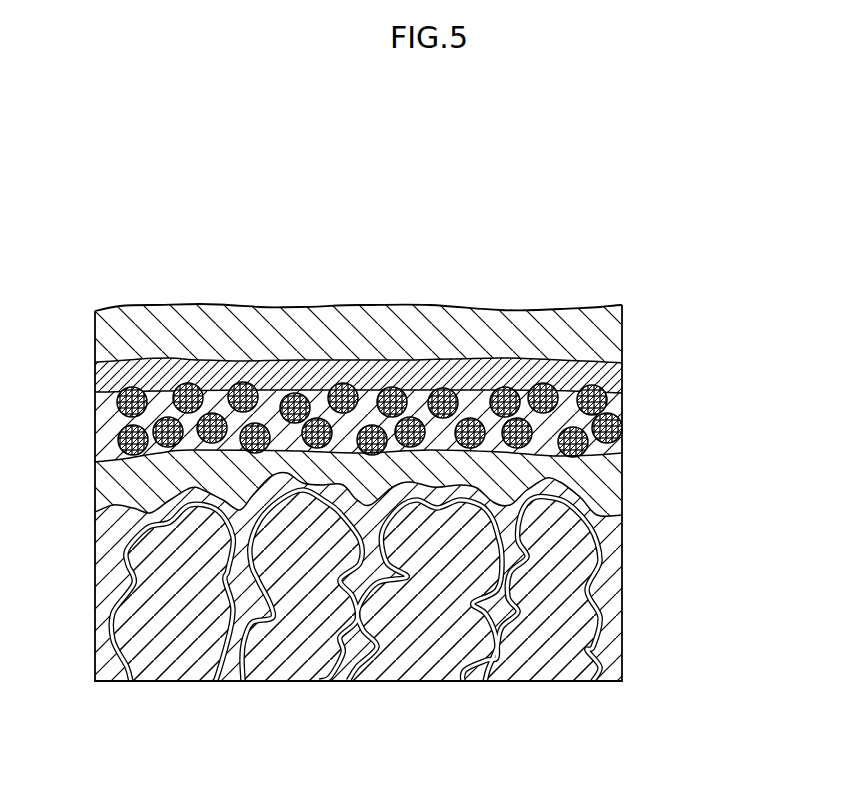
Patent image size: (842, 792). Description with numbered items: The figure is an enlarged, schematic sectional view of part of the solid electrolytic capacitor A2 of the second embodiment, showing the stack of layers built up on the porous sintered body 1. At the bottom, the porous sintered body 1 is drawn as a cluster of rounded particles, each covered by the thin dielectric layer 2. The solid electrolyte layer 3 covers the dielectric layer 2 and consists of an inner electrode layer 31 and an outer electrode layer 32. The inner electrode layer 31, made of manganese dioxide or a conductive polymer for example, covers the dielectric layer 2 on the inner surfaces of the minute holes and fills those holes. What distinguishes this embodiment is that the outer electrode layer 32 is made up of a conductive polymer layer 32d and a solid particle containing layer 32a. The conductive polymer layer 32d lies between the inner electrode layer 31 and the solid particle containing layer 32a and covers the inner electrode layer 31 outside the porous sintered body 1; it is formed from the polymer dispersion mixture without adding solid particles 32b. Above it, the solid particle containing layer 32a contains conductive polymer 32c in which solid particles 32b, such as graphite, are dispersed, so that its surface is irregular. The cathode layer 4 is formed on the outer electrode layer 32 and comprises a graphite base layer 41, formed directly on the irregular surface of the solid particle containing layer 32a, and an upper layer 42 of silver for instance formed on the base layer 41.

The solid electrolytic capacitor A2 is at (76, 281).
The porous sintered body 1 is at (568, 607).
The dielectric layer 2 is at (605, 557).
The solid electrolyte layer 3 is at (468, 531).
The inner electrode layer 31 is at (608, 522).
The outer electrode layer 32 is at (455, 449).
The solid particle containing layer 32a is at (434, 422).
The solid particles 32b is at (622, 428).
The conductive polymer 32c is at (622, 399).
The conductive polymer layer 32d is at (605, 489).
The cathode layer 4 is at (413, 347).
The base layer 41 is at (622, 370).
The upper layer 42 is at (622, 326).